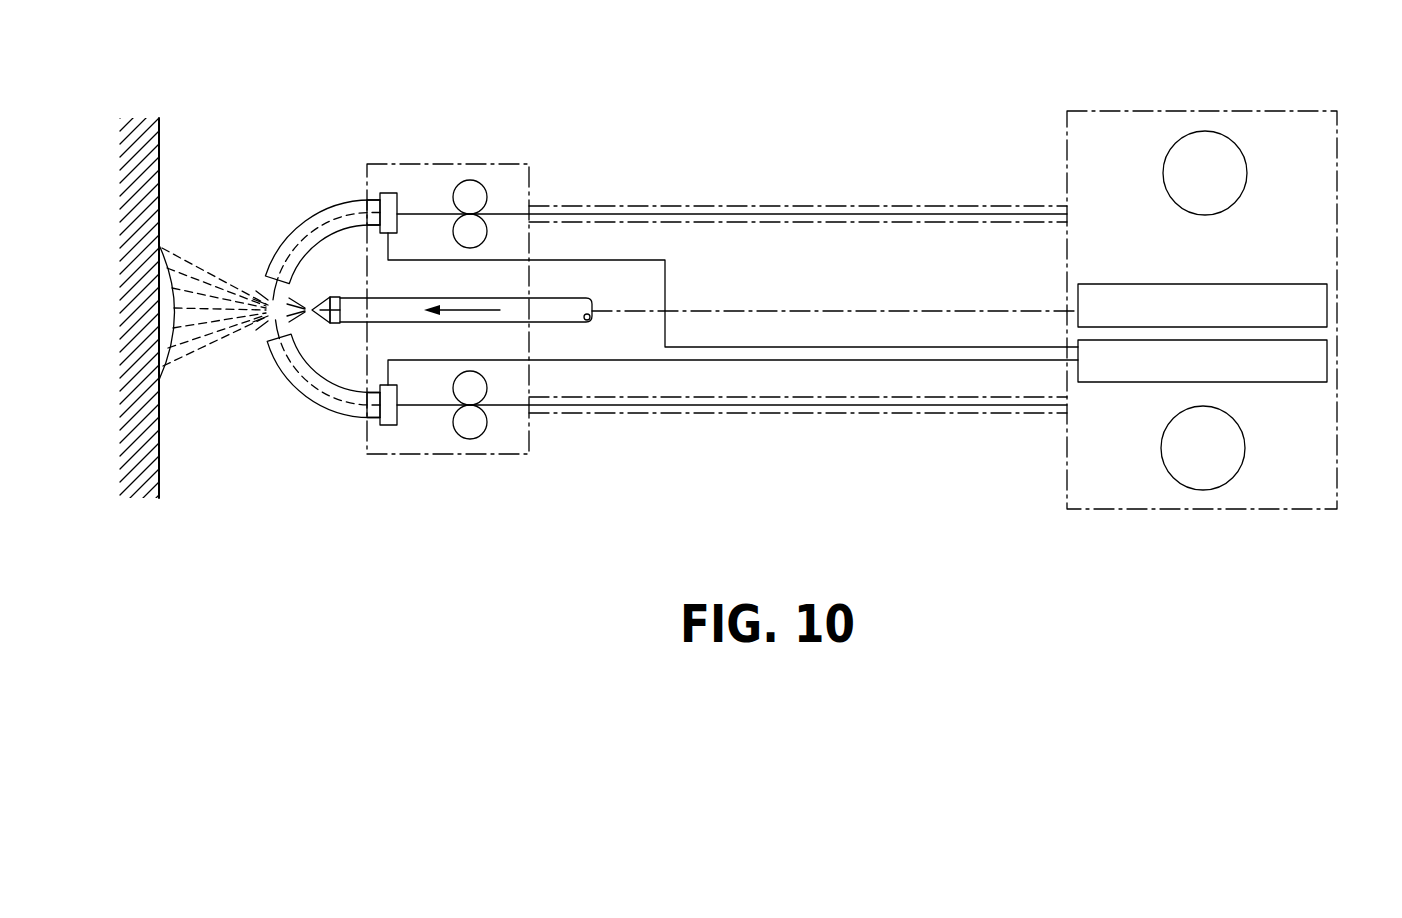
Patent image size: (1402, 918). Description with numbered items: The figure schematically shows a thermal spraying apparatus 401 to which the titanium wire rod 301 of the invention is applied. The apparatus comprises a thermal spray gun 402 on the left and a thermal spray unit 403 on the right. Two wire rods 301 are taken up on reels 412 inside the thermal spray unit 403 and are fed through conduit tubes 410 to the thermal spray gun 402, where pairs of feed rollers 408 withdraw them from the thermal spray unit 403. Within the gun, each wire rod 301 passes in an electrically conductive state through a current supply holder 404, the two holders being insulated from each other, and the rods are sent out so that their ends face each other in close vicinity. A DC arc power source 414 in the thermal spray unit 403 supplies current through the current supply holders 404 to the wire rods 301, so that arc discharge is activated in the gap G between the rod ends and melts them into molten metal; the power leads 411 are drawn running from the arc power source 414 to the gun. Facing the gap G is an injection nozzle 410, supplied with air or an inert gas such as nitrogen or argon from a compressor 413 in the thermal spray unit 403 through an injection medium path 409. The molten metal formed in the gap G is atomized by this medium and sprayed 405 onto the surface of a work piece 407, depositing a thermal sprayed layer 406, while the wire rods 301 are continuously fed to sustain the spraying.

The wire rod 301 is at (425, 210).
The thermal spraying apparatus 401 is at (949, 74).
The thermal spray gun 402 is at (452, 163).
The thermal spray unit 403 is at (1243, 108).
The current supply holder 404 is at (322, 212).
The spray 405 is at (203, 263).
The thermal sprayed layer 406 is at (172, 345).
The work piece 407 is at (150, 477).
The feed roller 408 is at (478, 227).
The injection medium path 409 is at (547, 307).
The conduit tube / injection nozzle 410 is at (318, 295).
The power cable 411 is at (892, 347).
The reel 412 is at (1232, 173).
The compressor 413 is at (1298, 283).
The DC arc power source 414 is at (1298, 382).
The gap G is at (262, 331).